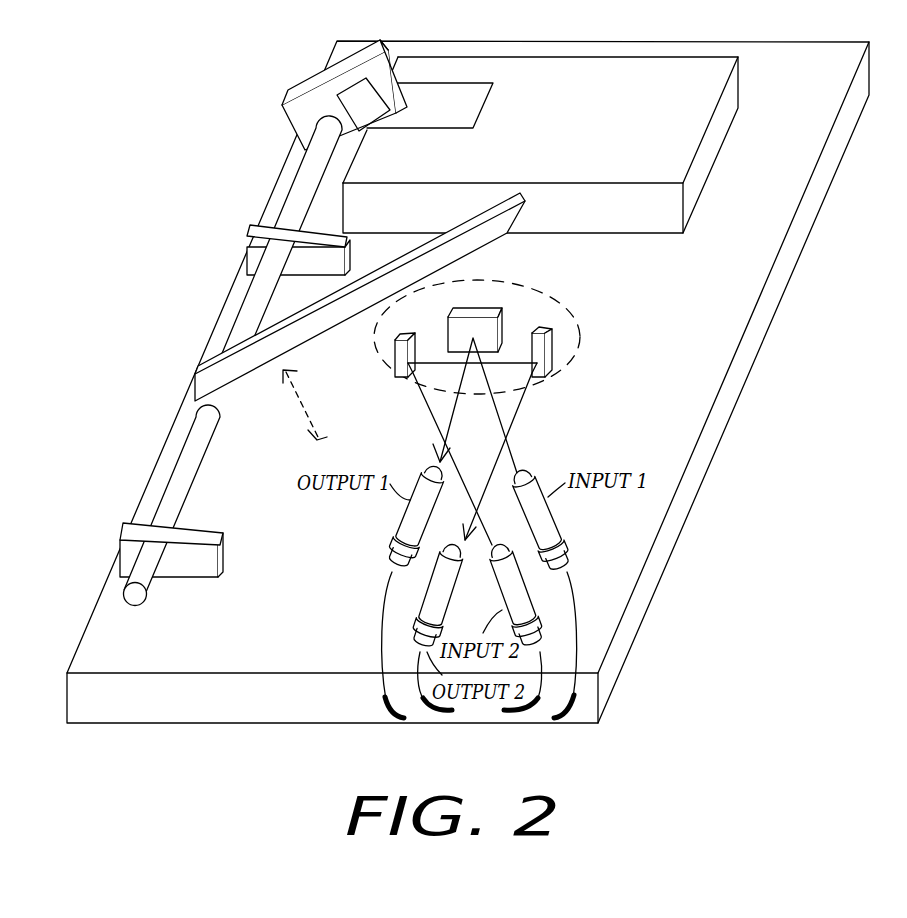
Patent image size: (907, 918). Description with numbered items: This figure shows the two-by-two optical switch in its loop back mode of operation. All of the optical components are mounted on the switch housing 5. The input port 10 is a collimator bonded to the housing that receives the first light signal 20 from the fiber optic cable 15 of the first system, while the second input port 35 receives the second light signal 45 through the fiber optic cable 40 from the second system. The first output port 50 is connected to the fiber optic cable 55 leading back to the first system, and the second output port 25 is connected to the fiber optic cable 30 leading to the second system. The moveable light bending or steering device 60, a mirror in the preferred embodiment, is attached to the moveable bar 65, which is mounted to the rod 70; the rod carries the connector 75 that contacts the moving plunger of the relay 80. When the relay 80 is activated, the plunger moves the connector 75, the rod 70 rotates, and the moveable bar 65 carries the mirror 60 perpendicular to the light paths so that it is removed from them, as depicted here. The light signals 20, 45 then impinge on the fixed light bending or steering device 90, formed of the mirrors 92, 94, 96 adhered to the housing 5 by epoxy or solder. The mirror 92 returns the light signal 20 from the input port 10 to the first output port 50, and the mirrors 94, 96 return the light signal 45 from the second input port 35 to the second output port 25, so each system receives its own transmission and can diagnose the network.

The switch housing 5 is at (738, 378).
The input port 10 is at (548, 527).
The fiber optic cable 15 is at (578, 652).
The light signal 20 is at (500, 428).
The second output port 25 is at (442, 573).
The fiber optic cable 30 is at (444, 718).
The second input port 35 is at (508, 573).
The fiber optic cable 40 is at (523, 718).
The light signal 45 is at (520, 413).
The first output port 50 is at (408, 530).
The fiber optic cable 55 is at (376, 697).
The light bending or steering device 60 is at (492, 282).
The moveable bar 65 is at (220, 367).
The rod 70 is at (188, 453).
The connector 75 is at (300, 113).
The relay 80 is at (658, 77).
The fixed light bending or steering device 90 is at (553, 307).
The mirror 92 is at (500, 304).
The mirror 94 is at (394, 373).
The mirror 96 is at (550, 348).